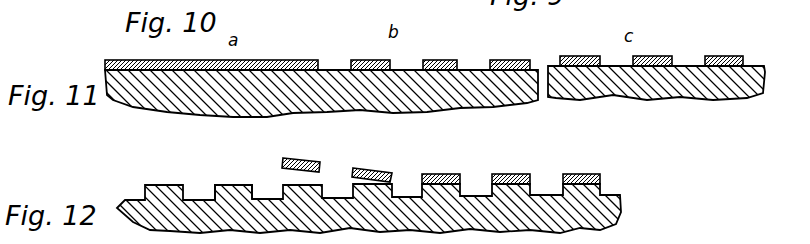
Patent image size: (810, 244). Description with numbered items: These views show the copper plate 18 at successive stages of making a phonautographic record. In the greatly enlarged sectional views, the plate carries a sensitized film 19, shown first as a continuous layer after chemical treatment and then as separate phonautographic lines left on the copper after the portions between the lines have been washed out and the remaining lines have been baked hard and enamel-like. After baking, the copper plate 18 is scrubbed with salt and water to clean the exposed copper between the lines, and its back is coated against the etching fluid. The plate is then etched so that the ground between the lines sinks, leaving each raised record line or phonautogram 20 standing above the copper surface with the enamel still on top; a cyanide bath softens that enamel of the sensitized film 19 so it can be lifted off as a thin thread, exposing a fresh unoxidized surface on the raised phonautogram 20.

In FIG. 10, the copper plate 18 is at (296, 99).
In FIG. 11, the copper plate 18 is at (747, 72).
In FIG. 12, the copper plate 18 is at (608, 204).
In FIG. 10, the sensitized film 19 is at (303, 61).
In FIG. 11, the sensitized film 19 is at (661, 56).
In FIG. 12, the sensitized film 19 is at (360, 167).
In FIG. 12, the raised record line or phonautogram 20 is at (230, 184).